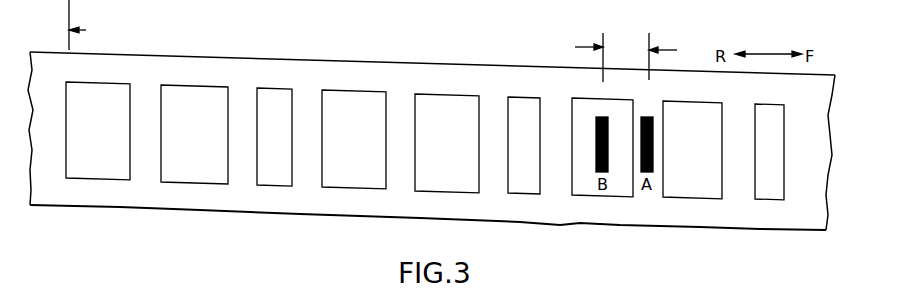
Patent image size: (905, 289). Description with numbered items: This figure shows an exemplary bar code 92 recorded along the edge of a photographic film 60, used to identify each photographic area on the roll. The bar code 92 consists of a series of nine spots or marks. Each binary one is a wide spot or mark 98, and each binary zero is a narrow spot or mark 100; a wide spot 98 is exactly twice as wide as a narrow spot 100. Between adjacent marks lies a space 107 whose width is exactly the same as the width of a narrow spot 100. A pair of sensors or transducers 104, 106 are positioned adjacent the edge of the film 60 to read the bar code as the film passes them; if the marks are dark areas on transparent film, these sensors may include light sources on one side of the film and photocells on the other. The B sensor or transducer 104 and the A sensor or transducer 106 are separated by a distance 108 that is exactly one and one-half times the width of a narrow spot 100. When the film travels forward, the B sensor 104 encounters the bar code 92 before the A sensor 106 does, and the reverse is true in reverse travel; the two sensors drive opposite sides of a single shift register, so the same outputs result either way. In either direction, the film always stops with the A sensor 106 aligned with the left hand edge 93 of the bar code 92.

The film 60 is at (412, 62).
The bar code 92 is at (52, 158).
The left hand edge of the bar code 93 is at (90, 25).
The wide spot or mark 98 is at (117, 82).
The narrow spot or mark 100 is at (281, 88).
The B sensor or transducer 104 is at (598, 117).
The A sensor or transducer 106 is at (648, 118).
The space between spots or marks 107 is at (150, 90).
The distance between sensors 108 is at (626, 57).